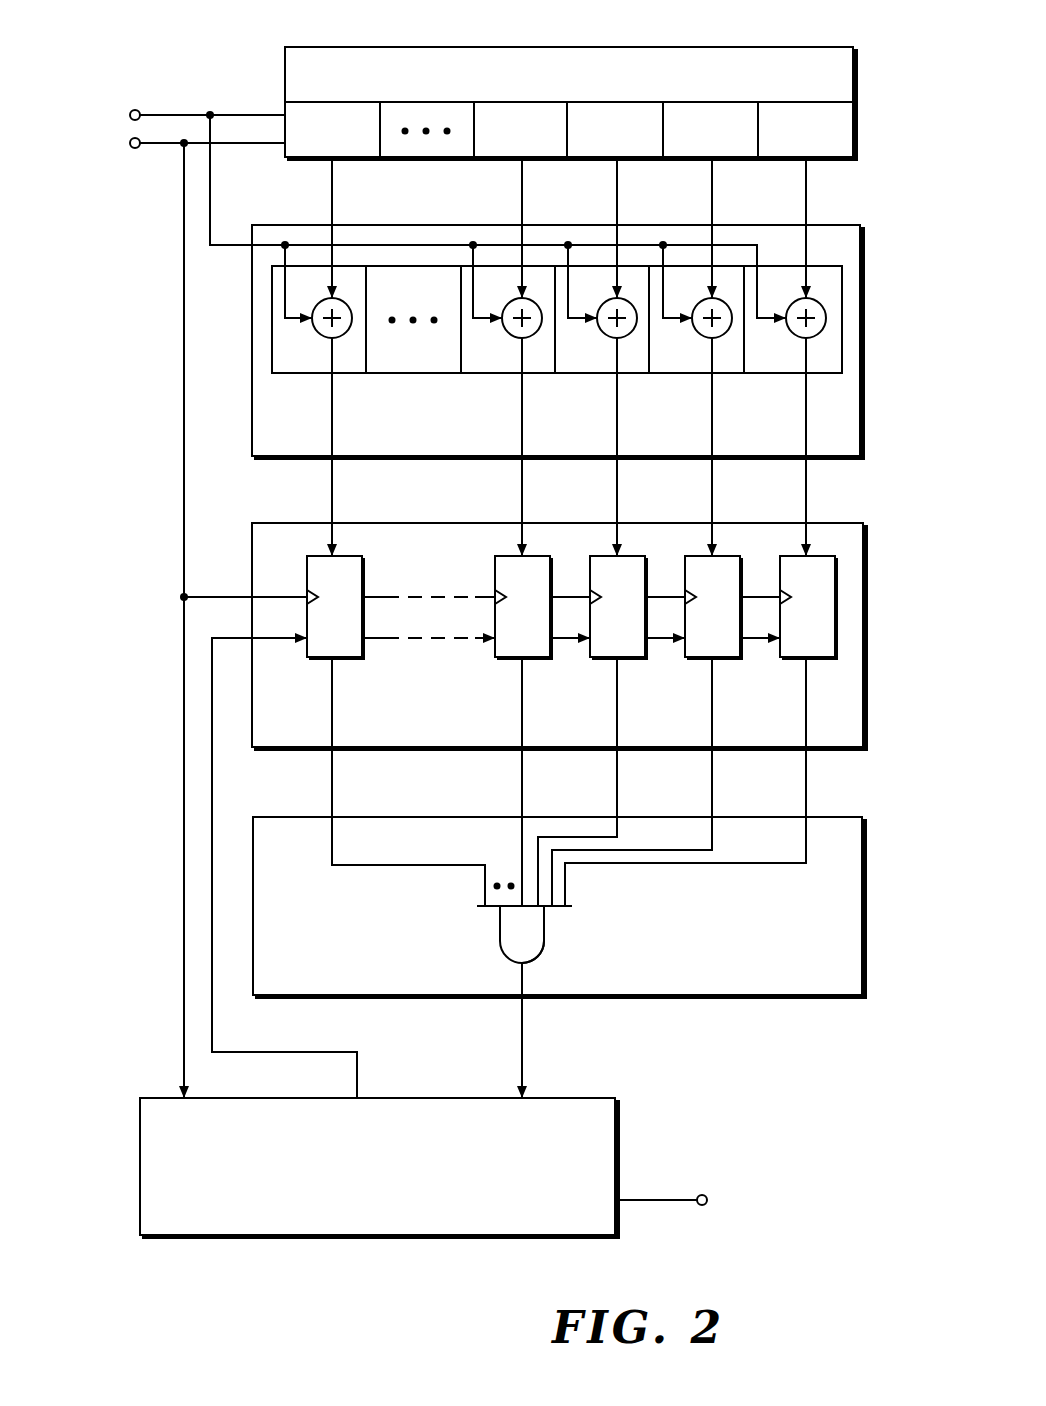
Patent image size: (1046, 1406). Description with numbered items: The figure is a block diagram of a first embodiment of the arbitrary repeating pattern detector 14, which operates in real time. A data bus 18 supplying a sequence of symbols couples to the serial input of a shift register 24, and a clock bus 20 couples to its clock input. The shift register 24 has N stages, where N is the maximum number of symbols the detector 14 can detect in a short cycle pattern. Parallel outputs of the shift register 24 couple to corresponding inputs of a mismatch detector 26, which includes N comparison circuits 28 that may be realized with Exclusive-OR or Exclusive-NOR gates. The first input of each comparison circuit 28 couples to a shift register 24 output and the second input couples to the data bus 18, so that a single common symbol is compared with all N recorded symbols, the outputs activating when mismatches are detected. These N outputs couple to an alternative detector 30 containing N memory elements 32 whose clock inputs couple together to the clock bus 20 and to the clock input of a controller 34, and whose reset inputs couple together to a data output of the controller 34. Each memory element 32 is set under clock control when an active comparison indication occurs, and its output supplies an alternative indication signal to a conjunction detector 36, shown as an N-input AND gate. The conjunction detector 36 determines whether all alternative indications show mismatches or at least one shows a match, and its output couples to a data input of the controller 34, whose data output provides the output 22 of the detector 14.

The arbitrary repeating pattern detector 14 is at (437, 1295).
The data bus 18 is at (138, 109).
The clock bus 20 is at (138, 149).
The output 22 is at (707, 1197).
The shift register 24 is at (758, 46).
The mismatch detector 26 is at (560, 321).
The comparison circuits 28 is at (298, 375).
The alternative detector 30 is at (560, 616).
The memory elements 32 is at (312, 660).
The controller 34 is at (187, 1238).
The conjunction detector 36 is at (812, 998).